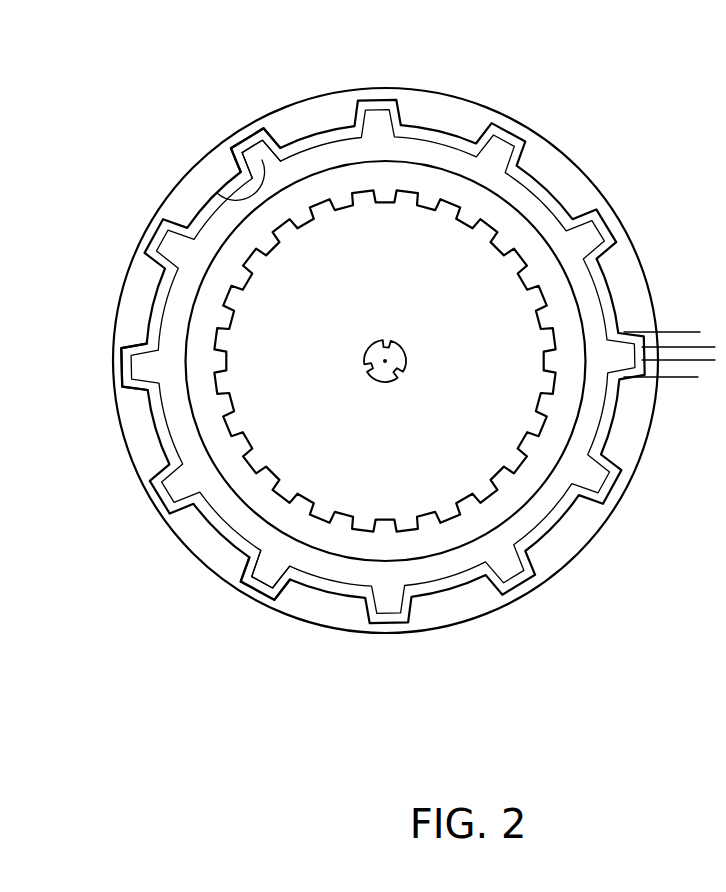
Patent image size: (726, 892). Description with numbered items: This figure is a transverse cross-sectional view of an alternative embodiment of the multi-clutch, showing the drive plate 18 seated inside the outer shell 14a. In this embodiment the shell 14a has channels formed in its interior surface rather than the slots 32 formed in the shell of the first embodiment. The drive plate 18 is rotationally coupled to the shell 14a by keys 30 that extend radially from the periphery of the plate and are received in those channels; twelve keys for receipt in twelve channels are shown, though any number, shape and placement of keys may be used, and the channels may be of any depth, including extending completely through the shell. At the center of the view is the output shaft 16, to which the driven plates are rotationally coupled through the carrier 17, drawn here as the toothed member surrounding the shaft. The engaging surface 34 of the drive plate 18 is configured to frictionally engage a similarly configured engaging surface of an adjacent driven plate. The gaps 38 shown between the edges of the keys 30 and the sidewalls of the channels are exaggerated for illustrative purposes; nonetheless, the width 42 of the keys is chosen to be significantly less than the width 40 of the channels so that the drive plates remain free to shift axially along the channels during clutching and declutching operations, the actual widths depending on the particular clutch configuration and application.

The shell 14a is at (636, 247).
The output shaft 16 is at (412, 352).
The carrier 17 is at (438, 435).
The drive plate 18 is at (519, 178).
The keys 30 is at (217, 193).
The slots 32 is at (275, 128).
The engaging surface 34 is at (187, 362).
The gaps 38 is at (262, 580).
The width of the channels 40 is at (680, 387).
The width of the keys 42 is at (708, 371).